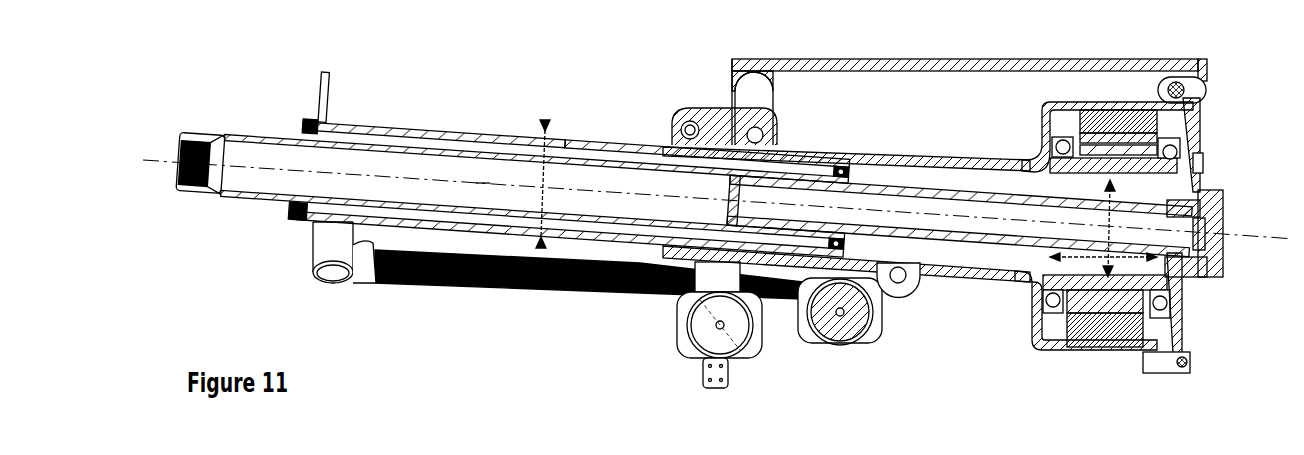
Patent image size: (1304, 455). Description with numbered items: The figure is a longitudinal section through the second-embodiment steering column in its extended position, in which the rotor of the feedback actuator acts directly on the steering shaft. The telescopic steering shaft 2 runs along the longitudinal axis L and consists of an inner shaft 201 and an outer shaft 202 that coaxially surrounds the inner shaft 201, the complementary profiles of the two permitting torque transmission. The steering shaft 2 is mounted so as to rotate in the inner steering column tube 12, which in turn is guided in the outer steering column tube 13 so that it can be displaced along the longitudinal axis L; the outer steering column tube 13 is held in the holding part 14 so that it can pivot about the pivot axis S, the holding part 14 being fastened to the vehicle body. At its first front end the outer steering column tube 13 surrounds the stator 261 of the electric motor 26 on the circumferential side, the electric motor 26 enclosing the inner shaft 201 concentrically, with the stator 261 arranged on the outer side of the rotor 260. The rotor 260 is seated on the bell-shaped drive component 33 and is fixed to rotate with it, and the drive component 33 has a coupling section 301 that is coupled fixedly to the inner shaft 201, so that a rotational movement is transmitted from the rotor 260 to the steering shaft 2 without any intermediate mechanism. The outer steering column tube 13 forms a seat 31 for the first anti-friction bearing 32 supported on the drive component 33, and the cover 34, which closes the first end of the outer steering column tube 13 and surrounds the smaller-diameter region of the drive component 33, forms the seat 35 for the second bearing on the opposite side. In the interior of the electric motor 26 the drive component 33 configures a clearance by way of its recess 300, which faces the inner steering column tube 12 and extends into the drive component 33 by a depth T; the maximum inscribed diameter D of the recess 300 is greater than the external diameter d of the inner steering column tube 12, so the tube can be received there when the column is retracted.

The steering shaft 2 is at (232, 133).
The inner steering column tube 12 is at (590, 140).
The outer steering column tube 13 is at (953, 157).
The holding part 14 is at (867, 63).
The electric motor 26 is at (1182, 317).
The seat 31 is at (1060, 137).
The first anti-friction bearing 32 is at (1035, 132).
The drive component 33 is at (1167, 188).
The cover 34 is at (1200, 130).
The seat 35 is at (1168, 140).
The inner shaft 201 is at (898, 187).
The outer shaft 202 is at (402, 137).
The rotor 260 is at (1113, 113).
The stator 261 is at (1182, 333).
The recess 300 is at (1224, 197).
The coupling section 301 is at (1223, 262).
The pivot axis S is at (1203, 84).
The depth T is at (1185, 282).
The maximum inscribed diameter D is at (1097, 224).
The longitudinal axis L is at (482, 183).
The external diameter d is at (543, 126).